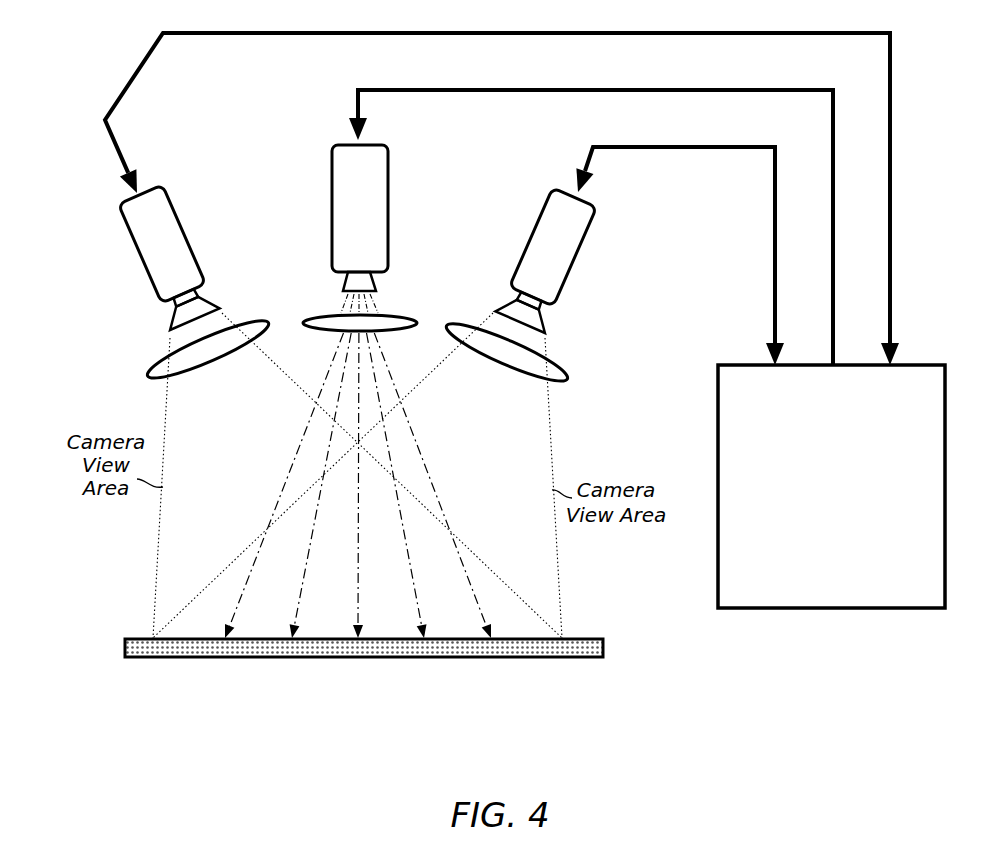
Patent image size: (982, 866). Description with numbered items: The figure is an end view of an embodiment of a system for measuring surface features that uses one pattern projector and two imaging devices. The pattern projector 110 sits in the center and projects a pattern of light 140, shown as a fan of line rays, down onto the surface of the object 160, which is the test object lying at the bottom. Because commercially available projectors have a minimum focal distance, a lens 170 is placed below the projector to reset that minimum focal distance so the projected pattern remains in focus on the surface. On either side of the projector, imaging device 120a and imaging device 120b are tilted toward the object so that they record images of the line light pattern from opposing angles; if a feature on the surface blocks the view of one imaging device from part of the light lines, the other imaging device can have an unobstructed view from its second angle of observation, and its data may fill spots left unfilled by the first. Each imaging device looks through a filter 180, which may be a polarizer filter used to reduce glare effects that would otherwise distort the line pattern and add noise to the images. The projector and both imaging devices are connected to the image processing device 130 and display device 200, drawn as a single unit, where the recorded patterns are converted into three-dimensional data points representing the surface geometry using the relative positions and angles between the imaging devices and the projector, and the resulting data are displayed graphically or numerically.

The pattern projector 110 is at (390, 197).
The imaging device 120a is at (127, 246).
The imaging device 120b is at (580, 264).
The image processing device 130 is at (831, 486).
The pattern of light 140 is at (273, 508).
The object 160 is at (395, 659).
The lens 170 is at (313, 316).
The filter 180 is at (603, 372).
The display device 200 is at (831, 486).